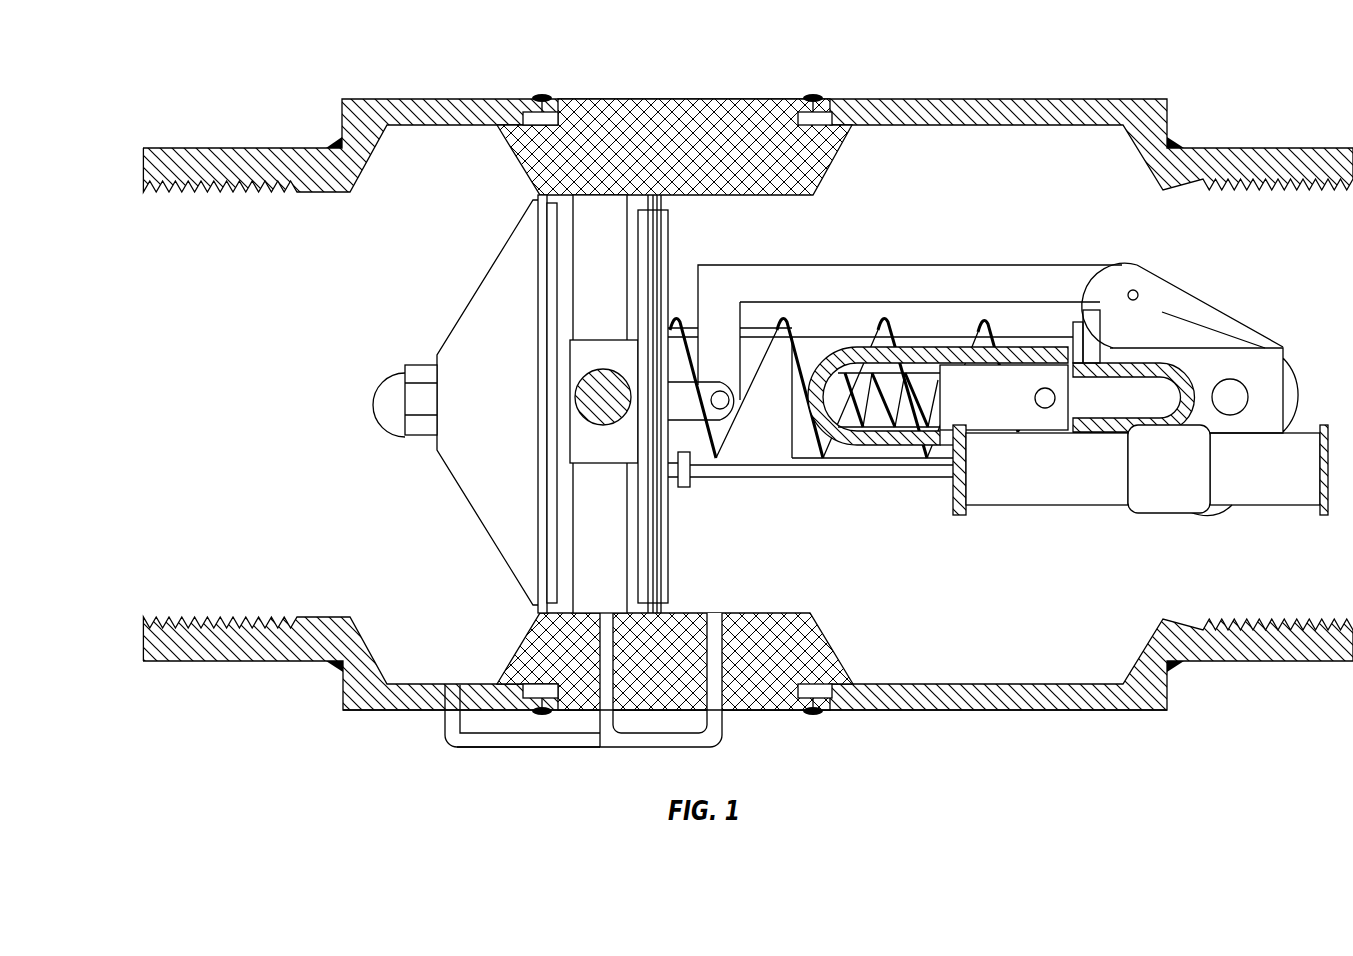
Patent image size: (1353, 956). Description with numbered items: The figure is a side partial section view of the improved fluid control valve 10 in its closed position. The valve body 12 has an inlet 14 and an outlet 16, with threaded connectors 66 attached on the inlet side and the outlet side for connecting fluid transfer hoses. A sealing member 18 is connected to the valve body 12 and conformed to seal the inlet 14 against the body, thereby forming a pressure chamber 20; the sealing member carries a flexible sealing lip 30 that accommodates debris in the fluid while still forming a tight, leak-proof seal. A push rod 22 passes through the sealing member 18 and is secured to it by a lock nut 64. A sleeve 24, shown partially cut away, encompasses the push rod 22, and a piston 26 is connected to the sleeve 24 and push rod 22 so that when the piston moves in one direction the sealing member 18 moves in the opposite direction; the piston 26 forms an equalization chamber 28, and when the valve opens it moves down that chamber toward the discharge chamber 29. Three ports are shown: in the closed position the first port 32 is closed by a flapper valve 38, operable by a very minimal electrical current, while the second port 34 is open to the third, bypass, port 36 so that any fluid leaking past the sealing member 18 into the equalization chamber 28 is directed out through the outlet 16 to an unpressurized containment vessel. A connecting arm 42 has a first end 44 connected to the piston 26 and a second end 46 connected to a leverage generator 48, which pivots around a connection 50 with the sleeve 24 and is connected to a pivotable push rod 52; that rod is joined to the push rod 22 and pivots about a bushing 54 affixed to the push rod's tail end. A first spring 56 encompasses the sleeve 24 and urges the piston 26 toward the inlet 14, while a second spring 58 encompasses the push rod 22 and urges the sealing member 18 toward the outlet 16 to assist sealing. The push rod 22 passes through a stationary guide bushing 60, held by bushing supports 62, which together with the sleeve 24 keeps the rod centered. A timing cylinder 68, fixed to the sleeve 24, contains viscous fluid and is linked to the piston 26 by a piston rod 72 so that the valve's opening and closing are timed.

The fluid control valve 10 is at (292, 708).
The valve body 12 is at (655, 105).
The inlet 14 is at (264, 411).
The outlet 16 is at (1265, 556).
The sealing member 18 is at (467, 302).
The pressure chamber 20 is at (412, 155).
The push rod 22 is at (382, 410).
The sleeve 24 is at (1275, 348).
The piston 26 is at (668, 227).
The equalization chamber 28 is at (568, 277).
The discharge chamber 29 is at (1017, 157).
The flexible sealing lip 30 is at (535, 195).
The first port 32 is at (456, 680).
The second port 34 is at (608, 608).
The third port 36 is at (720, 608).
The flapper valve 38 is at (600, 742).
The connecting arm 42 is at (828, 265).
The first end 44 is at (687, 408).
The second end 46 is at (1085, 273).
The leverage generator 48 is at (1197, 302).
The connection 50 is at (1223, 387).
The pivotable push rod 52 is at (1075, 395).
The bushing 54 is at (1055, 372).
The first spring 56 is at (878, 320).
The second spring 58 is at (895, 420).
The stationary guide bushing 60 is at (567, 405).
The bushing supports 62 is at (588, 275).
The lock nut 64 is at (418, 372).
The threaded connectors 66 is at (292, 155).
The timing cylinder 68 is at (1035, 510).
The piston rod 72 is at (795, 472).